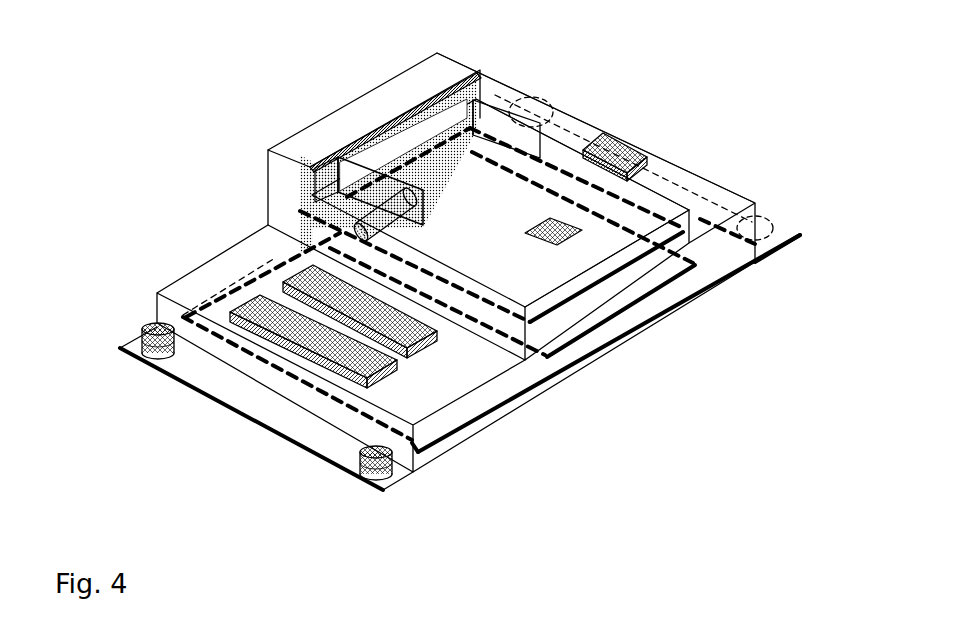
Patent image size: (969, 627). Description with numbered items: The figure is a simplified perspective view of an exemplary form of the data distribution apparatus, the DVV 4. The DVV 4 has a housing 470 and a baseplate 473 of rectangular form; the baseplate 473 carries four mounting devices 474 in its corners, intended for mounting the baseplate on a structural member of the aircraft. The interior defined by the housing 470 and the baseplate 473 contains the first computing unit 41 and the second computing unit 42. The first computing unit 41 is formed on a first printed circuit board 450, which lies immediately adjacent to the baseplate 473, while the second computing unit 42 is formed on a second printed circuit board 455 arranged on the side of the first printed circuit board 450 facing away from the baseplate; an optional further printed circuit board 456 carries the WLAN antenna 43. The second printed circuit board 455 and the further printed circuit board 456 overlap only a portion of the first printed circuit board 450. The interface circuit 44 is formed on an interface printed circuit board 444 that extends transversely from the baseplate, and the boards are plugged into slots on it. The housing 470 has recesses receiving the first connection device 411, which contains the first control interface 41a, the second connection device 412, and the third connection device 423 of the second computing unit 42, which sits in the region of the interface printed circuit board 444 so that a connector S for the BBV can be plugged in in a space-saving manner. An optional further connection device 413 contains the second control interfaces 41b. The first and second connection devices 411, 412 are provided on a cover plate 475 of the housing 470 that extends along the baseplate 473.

The DVV 4 is at (680, 39).
The first computing unit 41 is at (483, 417).
The first control interface 41a is at (647, 170).
The second control interface 41b is at (277, 312).
The first connection device 411 is at (647, 170).
The second connection device 412 is at (257, 306).
The further connection device 413 is at (297, 275).
The second computing unit 42 is at (600, 313).
The WLAN antenna 43 is at (548, 237).
The interface circuit 44 is at (362, 163).
The interface printed circuit board 444 is at (340, 145).
The third connection device 423 is at (473, 108).
The connector S is at (547, 132).
The first printed circuit board 450 is at (450, 435).
The second printed circuit board 455 is at (593, 312).
The further printed circuit board 456 is at (652, 255).
The housing 470 is at (155, 292).
The baseplate 473 is at (798, 234).
The mounting devices 474 is at (142, 352).
The cover plate 475 is at (395, 398).